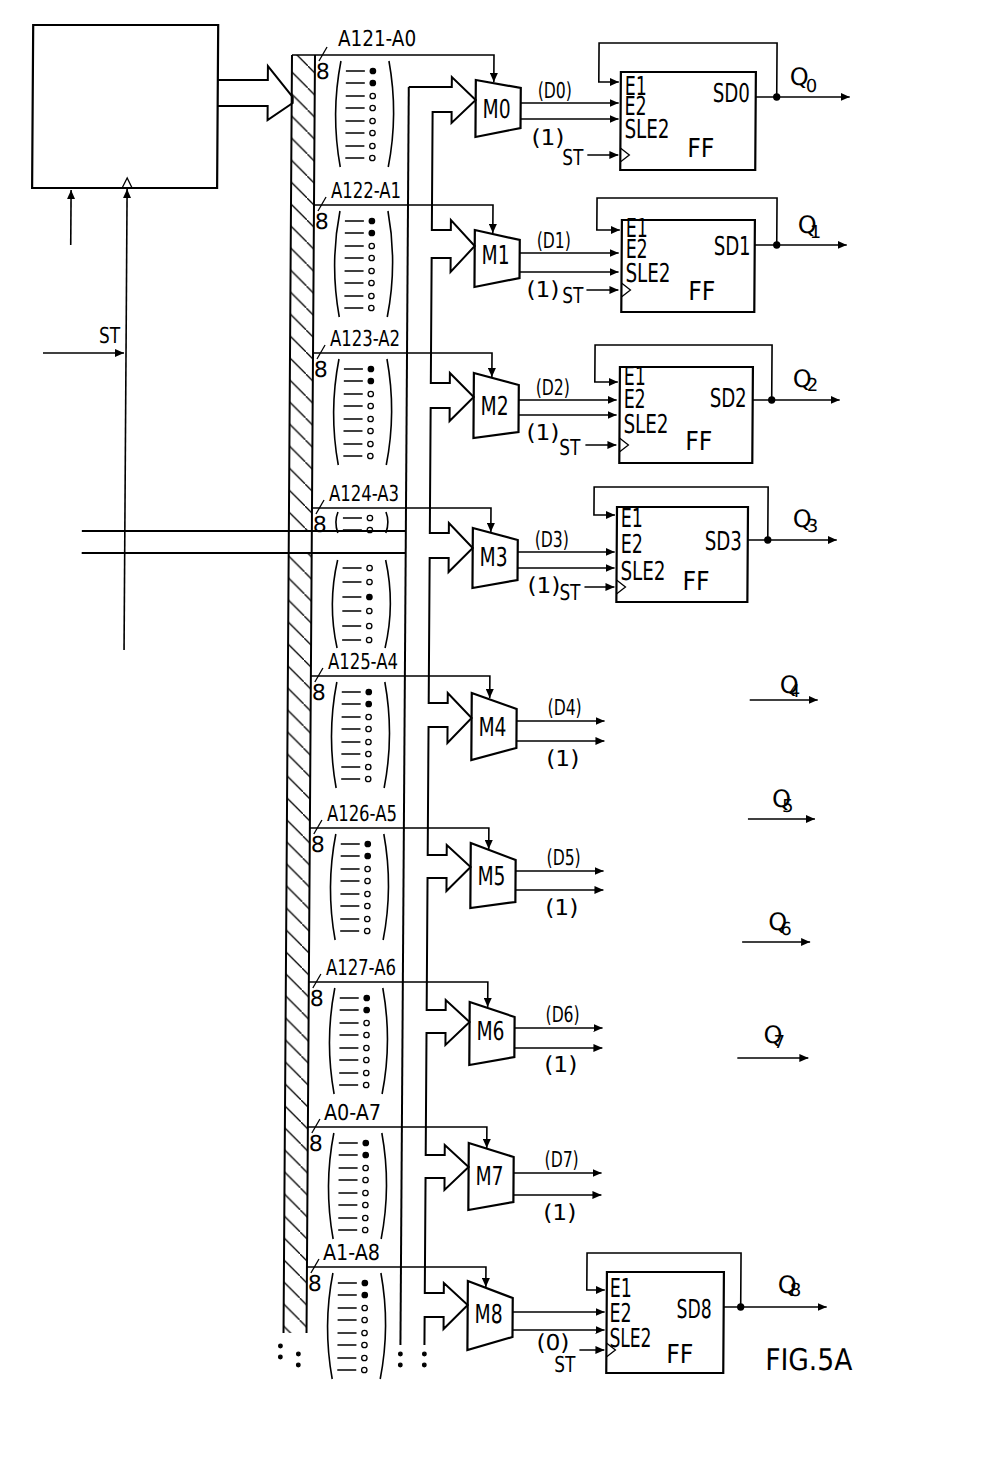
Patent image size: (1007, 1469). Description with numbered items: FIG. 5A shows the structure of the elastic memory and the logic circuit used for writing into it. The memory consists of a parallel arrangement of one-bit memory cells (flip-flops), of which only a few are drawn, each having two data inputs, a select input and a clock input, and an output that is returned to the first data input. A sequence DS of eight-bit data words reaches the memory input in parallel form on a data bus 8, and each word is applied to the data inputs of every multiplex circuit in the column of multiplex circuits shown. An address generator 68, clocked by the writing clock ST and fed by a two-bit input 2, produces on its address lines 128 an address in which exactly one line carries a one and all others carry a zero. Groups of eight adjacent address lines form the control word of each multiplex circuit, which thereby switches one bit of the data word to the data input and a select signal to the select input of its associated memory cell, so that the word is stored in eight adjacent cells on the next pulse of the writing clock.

The address generator 68 is at (161, 37).
The 128-bit address bus 128 is at (230, 117).
The 2-bit control input 2 is at (82, 217).
The 8-bit data bus D0-D7 8 is at (257, 567).